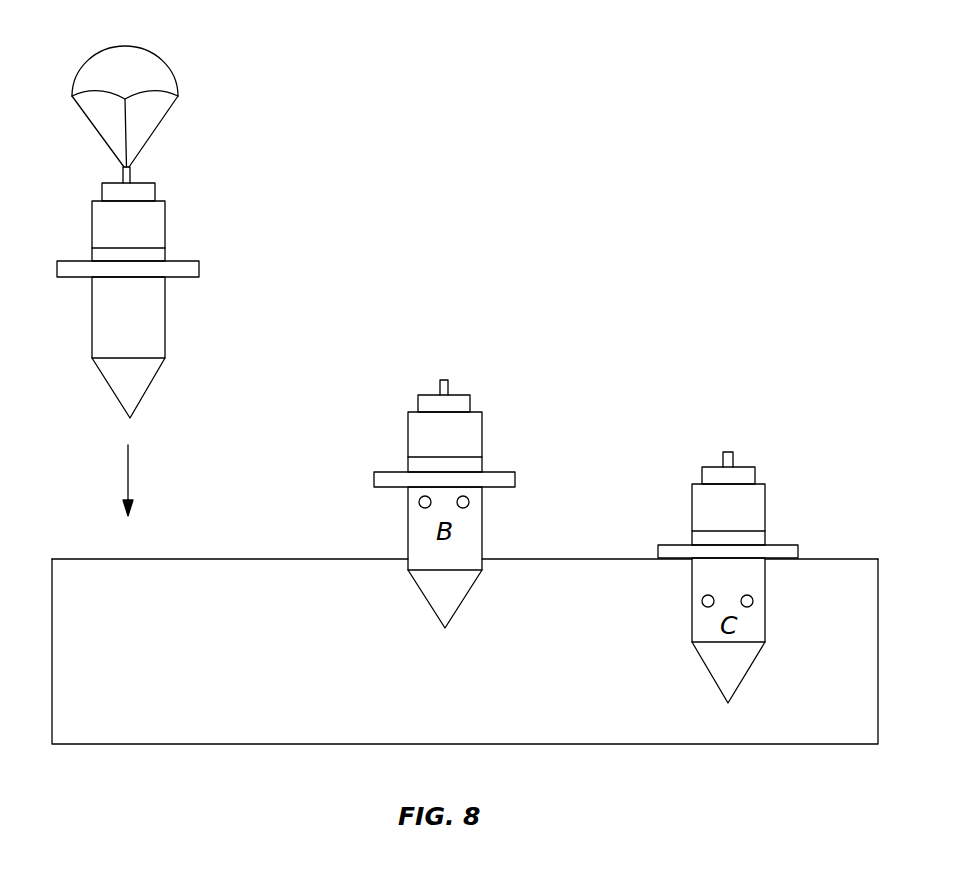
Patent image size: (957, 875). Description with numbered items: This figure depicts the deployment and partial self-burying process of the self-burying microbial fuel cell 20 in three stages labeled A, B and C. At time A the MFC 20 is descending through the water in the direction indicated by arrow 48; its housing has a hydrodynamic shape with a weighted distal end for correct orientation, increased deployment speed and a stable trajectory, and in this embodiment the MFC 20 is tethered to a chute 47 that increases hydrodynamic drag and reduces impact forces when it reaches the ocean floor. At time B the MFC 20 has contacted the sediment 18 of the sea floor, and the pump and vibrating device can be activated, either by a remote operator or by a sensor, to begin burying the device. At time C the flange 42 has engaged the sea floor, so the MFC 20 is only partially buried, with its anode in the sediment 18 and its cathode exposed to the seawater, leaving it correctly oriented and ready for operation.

The sediment 18 is at (288, 665).
The self-burying microbial fuel cell 20 is at (196, 223).
The flange 42 is at (668, 555).
The chute 47 is at (173, 72).
The arrow 48 is at (128, 478).